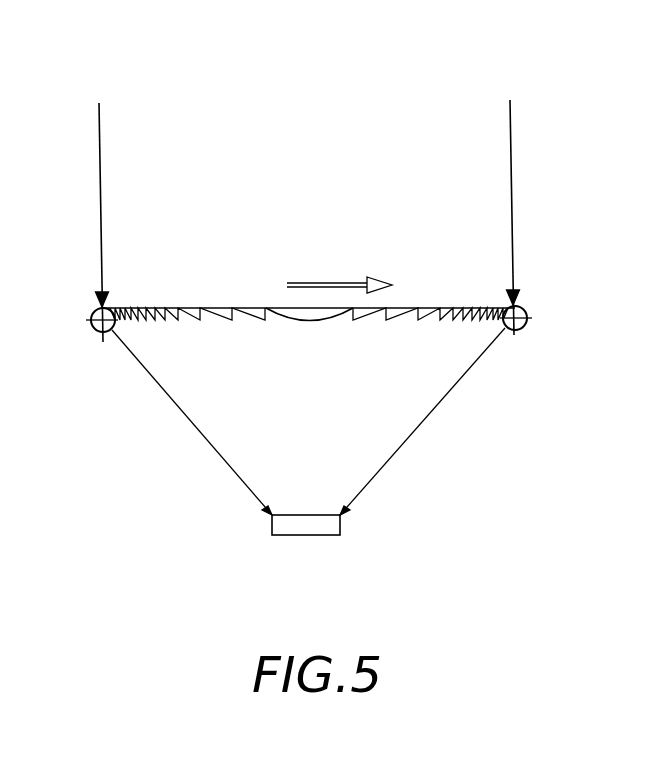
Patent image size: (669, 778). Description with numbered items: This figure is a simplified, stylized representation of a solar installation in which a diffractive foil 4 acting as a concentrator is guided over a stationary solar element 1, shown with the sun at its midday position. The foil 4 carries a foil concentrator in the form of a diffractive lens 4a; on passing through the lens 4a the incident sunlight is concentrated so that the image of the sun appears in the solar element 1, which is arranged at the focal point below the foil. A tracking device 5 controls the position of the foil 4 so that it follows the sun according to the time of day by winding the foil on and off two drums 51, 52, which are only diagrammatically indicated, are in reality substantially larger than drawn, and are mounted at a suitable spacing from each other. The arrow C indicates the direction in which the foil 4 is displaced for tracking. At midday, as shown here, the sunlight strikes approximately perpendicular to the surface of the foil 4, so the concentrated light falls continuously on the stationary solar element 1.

The solar element 1 is at (310, 527).
The foil 4 is at (258, 307).
The diffractive lens 4a is at (347, 318).
The tracking device 5 is at (534, 308).
The drum 51 is at (93, 333).
The drum 52 is at (521, 331).
The conveying direction C is at (338, 282).